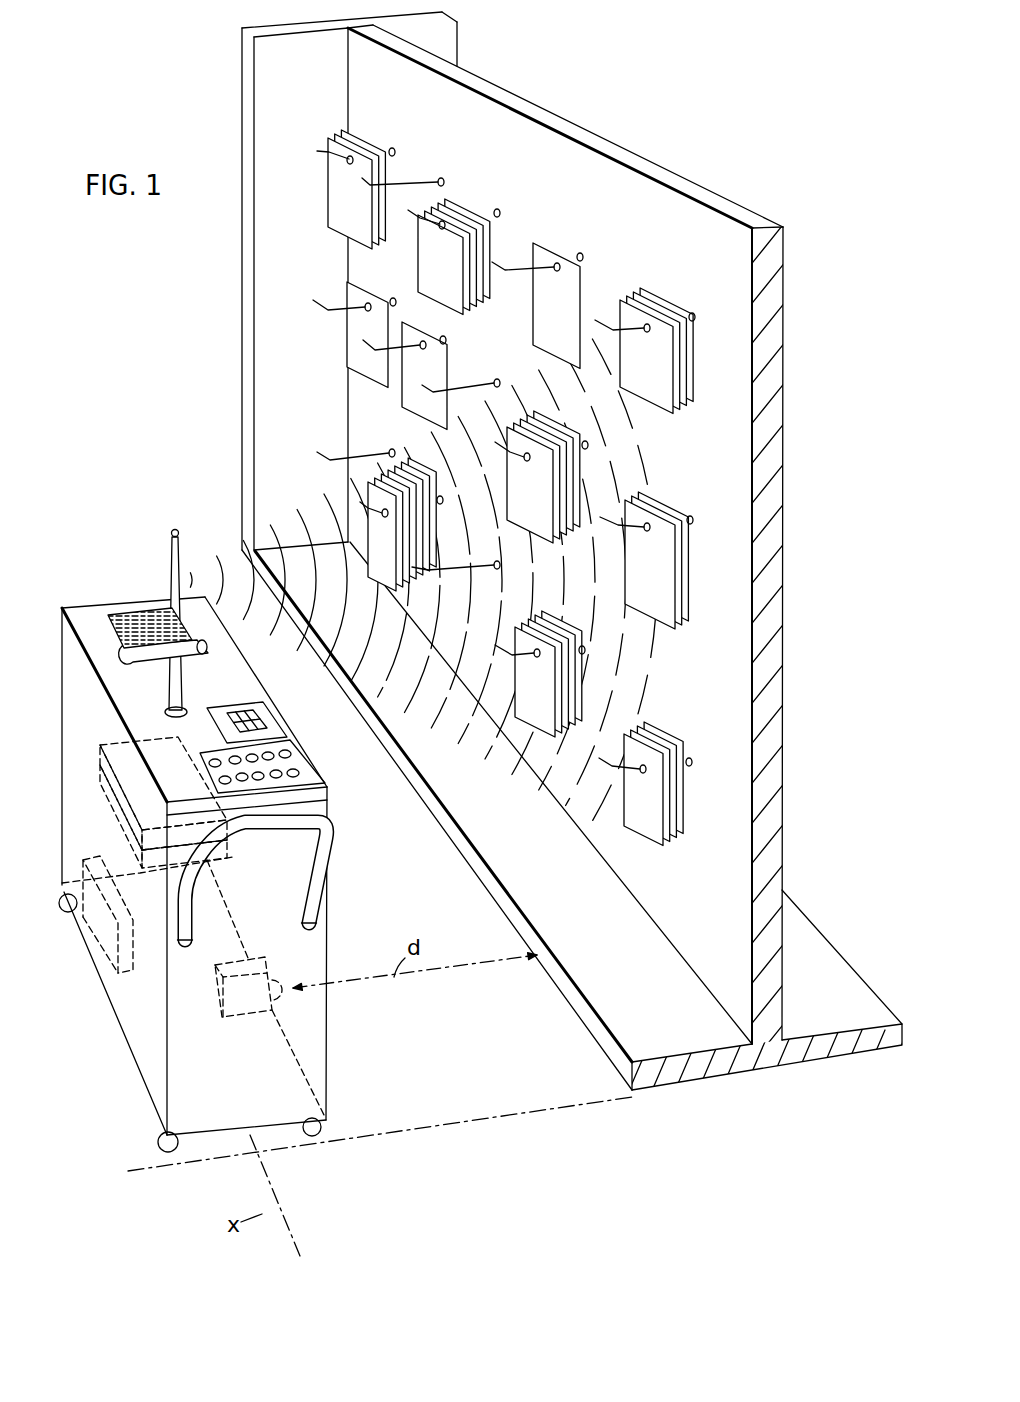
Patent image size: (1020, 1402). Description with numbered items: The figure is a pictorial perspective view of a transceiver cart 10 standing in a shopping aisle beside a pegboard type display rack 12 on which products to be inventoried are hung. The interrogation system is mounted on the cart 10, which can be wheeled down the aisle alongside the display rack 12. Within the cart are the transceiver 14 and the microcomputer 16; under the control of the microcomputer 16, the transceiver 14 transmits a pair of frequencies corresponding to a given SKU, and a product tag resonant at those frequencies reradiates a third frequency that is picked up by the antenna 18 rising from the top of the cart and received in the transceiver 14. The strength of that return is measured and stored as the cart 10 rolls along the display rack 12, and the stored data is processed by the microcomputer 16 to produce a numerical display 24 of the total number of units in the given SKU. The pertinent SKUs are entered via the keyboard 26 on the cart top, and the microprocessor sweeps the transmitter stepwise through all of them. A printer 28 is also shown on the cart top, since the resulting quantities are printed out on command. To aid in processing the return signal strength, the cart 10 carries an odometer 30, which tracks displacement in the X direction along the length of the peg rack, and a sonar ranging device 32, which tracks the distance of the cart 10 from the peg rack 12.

The cart 10 is at (106, 1050).
The pegboard type display rack 12 is at (233, 307).
The transceiver 14 is at (97, 757).
The microcomputer 16 is at (97, 768).
The antenna 18 is at (171, 552).
The numerical display 24 is at (247, 717).
The keyboard 26 is at (292, 760).
The printer 28 is at (138, 617).
The odometer 30 is at (97, 927).
The sonar ranging device 32 is at (247, 1000).